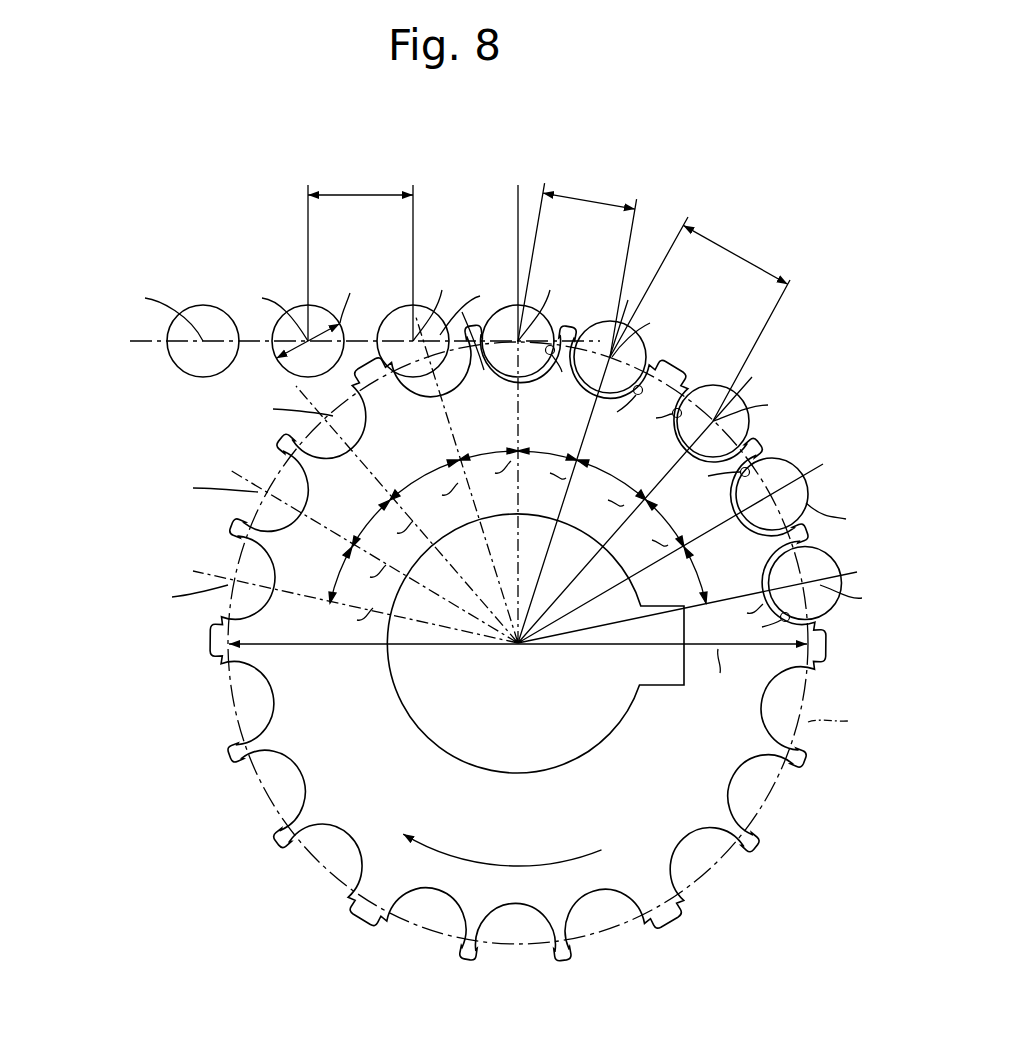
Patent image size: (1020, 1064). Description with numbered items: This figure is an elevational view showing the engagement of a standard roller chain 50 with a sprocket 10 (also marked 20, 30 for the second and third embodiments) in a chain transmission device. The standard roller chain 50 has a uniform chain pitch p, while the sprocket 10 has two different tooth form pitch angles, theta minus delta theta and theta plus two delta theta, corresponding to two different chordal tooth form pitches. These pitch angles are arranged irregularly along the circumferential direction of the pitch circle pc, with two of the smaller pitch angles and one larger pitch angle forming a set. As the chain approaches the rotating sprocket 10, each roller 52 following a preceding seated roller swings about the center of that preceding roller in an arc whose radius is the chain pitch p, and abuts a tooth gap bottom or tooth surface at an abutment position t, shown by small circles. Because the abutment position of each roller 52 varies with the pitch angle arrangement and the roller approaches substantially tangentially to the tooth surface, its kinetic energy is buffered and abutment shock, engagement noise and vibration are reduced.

The sprocket 10 is at (451, 616).
The sprocket 20 is at (518, 642).
The sprocket 30 is at (323, 740).
The standard roller chain 50 is at (229, 213).
The roller 52 is at (206, 305).